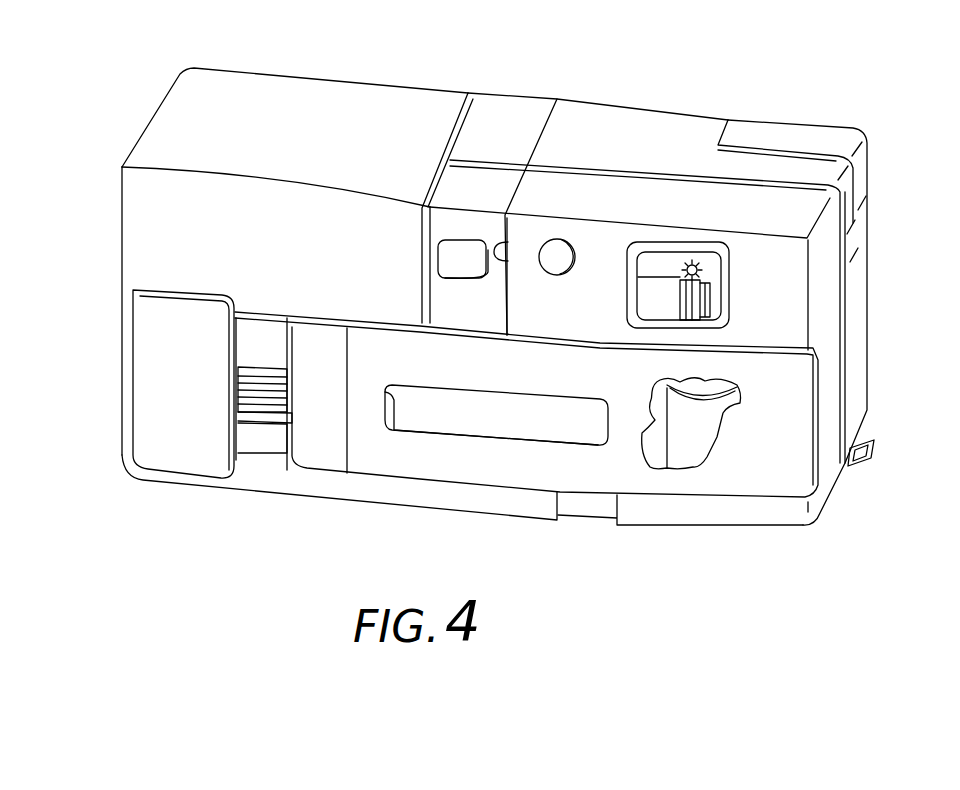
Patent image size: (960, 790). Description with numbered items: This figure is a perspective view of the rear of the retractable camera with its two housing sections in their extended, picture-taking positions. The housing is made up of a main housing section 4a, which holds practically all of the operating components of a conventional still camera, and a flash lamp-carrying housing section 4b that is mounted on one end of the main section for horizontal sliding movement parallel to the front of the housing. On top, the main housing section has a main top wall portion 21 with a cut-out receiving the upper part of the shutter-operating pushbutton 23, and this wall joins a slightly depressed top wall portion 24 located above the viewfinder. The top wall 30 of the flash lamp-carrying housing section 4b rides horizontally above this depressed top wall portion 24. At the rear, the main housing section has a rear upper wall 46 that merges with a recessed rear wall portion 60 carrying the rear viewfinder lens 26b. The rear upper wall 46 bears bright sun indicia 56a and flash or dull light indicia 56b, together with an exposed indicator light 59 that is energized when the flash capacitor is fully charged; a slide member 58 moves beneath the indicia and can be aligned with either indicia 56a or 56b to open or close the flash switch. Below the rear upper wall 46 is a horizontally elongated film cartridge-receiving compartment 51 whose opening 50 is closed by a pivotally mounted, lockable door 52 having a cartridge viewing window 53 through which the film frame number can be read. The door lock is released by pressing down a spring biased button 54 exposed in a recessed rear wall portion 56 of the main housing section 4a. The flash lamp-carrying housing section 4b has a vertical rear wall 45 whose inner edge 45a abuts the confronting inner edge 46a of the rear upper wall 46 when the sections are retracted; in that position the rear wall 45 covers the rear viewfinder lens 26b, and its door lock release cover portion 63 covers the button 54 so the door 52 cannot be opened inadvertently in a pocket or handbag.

The main housing section 4a is at (868, 269).
The flash lamp-carrying housing section 4b is at (121, 224).
The main top wall portion 21 is at (628, 127).
The shutter-operating pushbutton 23 is at (780, 130).
The depressed top wall portion 24 is at (488, 112).
The rear viewfinder lens 26b is at (462, 257).
The top wall 30 is at (283, 100).
The rear wall 45 is at (150, 243).
The inner edge 45a is at (420, 215).
The rear upper wall 46 is at (600, 247).
The inner edge 46a is at (525, 240).
The opening 50 is at (813, 402).
The film cartridge-receiving compartment 51 is at (685, 448).
The door 52 is at (777, 467).
The cartridge viewing window 53 is at (517, 422).
The spring biased button 54 is at (265, 437).
The recessed rear wall portion 56 is at (247, 330).
The bright sun indicia 56a is at (704, 269).
The flash or dull light indicia 56b is at (653, 273).
The slide member 58 is at (700, 303).
The indicator light 59 is at (557, 262).
The recessed rear wall portion 60 is at (447, 225).
The door lock release cover portion 63 is at (160, 383).